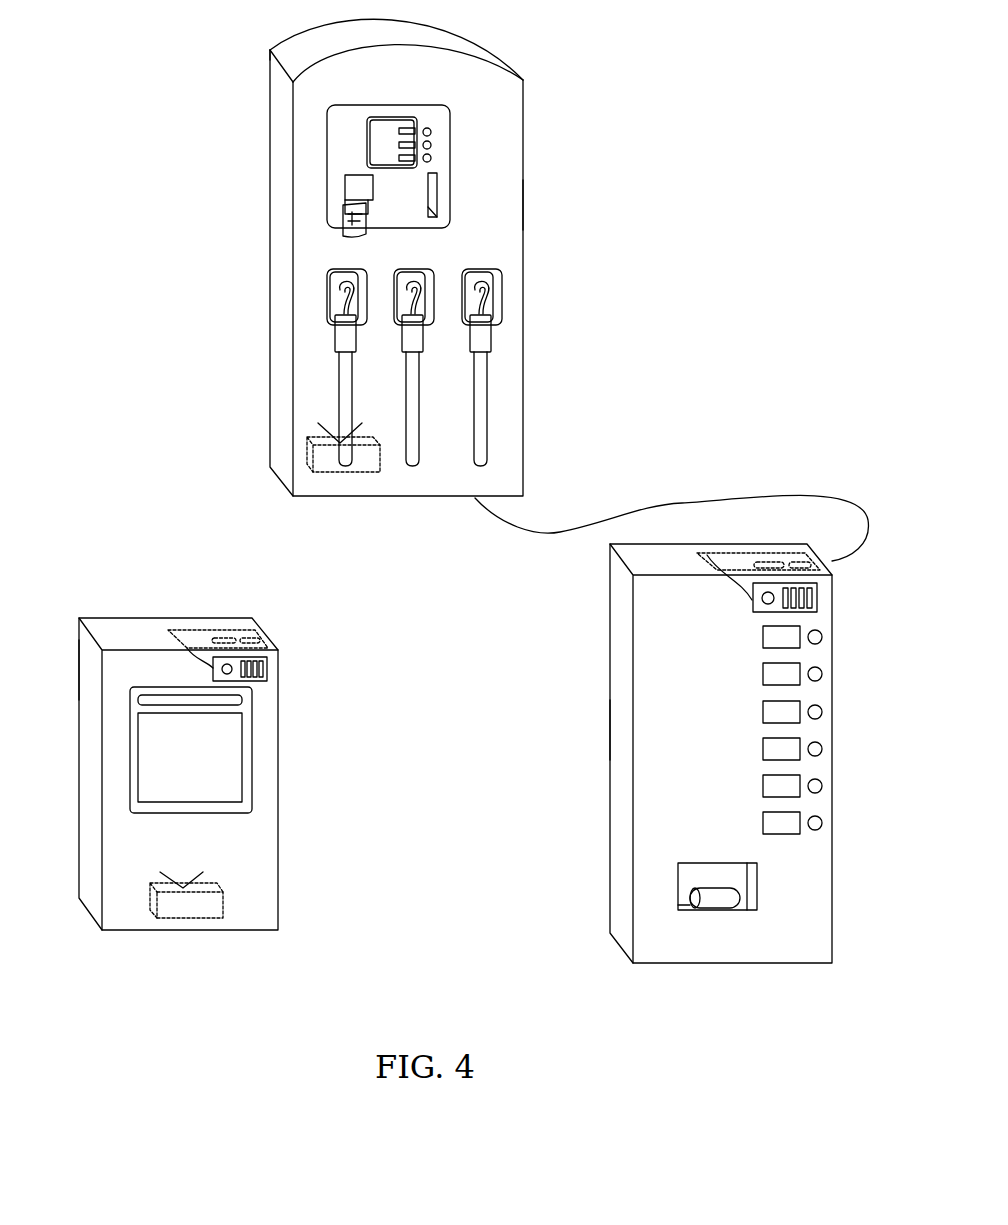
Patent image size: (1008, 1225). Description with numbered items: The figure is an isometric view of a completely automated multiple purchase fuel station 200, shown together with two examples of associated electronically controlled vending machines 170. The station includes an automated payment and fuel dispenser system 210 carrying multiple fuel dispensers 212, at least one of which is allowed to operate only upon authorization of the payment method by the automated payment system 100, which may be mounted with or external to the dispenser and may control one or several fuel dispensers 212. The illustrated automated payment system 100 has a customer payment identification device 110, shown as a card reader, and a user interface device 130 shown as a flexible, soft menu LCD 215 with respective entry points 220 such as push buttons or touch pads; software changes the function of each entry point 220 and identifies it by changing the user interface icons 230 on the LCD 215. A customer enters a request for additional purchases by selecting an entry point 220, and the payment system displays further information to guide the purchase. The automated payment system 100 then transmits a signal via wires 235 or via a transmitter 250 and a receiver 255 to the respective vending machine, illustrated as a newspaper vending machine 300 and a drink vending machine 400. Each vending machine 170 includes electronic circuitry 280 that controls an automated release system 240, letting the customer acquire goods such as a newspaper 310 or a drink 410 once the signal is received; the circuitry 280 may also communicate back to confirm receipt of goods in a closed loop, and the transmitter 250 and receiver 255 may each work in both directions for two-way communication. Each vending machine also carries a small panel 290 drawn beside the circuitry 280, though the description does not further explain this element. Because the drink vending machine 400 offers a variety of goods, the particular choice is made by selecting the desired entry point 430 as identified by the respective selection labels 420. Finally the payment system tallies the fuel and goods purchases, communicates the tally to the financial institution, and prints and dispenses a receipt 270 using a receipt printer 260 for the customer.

The automated payment system 100 is at (345, 147).
The customer payment identification device 110 is at (433, 193).
The user interface device 130 is at (273, 48).
The vending machine 170 is at (145, 633).
The automated multiple purchase fuel station 200 is at (655, 29).
The automated payment and fuel dispenser system 210 is at (502, 207).
The fuel dispenser 212 is at (483, 330).
The flexible, soft menu LCD 215 is at (389, 128).
The entry point 220 is at (430, 158).
The user interface icon 230 is at (415, 133).
The wires 235 is at (682, 503).
The automated release system 240 is at (247, 703).
The transmitter 250 is at (328, 458).
The receiver 255 is at (192, 908).
The receipt printer 260 is at (355, 190).
The receipt 270 is at (352, 218).
The electronic circuitry 280 is at (200, 638).
The control panel 290 is at (268, 668).
The newspaper vending machine 300 is at (86, 1015).
The newspaper 310 is at (227, 783).
The drink vending machine 400 is at (867, 1039).
The drink 410 is at (683, 900).
The selection label 420 is at (782, 720).
The entry point 430 is at (813, 713).